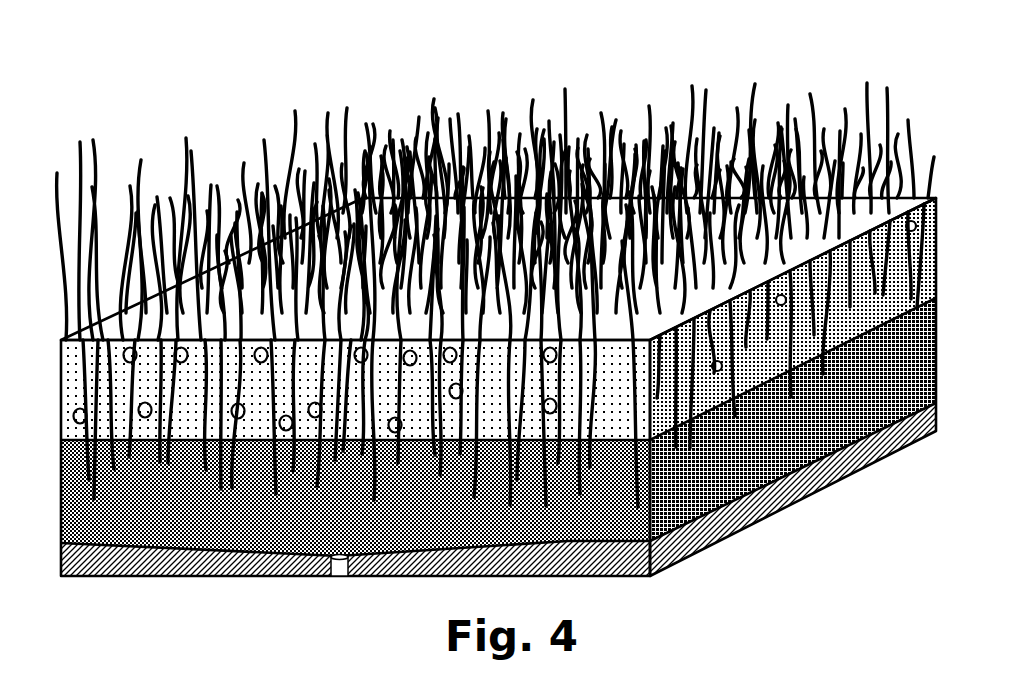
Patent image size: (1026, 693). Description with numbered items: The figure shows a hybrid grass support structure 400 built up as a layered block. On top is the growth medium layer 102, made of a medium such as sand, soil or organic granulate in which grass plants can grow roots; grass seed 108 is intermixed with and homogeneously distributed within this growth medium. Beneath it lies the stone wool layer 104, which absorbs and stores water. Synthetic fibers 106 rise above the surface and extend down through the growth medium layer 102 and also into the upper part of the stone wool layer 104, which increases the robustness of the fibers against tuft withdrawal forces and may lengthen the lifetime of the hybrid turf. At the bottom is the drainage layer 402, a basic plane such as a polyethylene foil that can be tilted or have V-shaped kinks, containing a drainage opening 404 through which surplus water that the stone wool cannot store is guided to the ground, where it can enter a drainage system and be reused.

The hybrid grass support structure 400 is at (792, 73).
The growth medium layer 102 is at (625, 394).
The stone wool layer 104 is at (625, 525).
The synthetic fibers 106 is at (393, 123).
The grass seed 108 is at (123, 340).
The drainage layer 402 is at (625, 562).
The drainage opening 404 is at (326, 570).